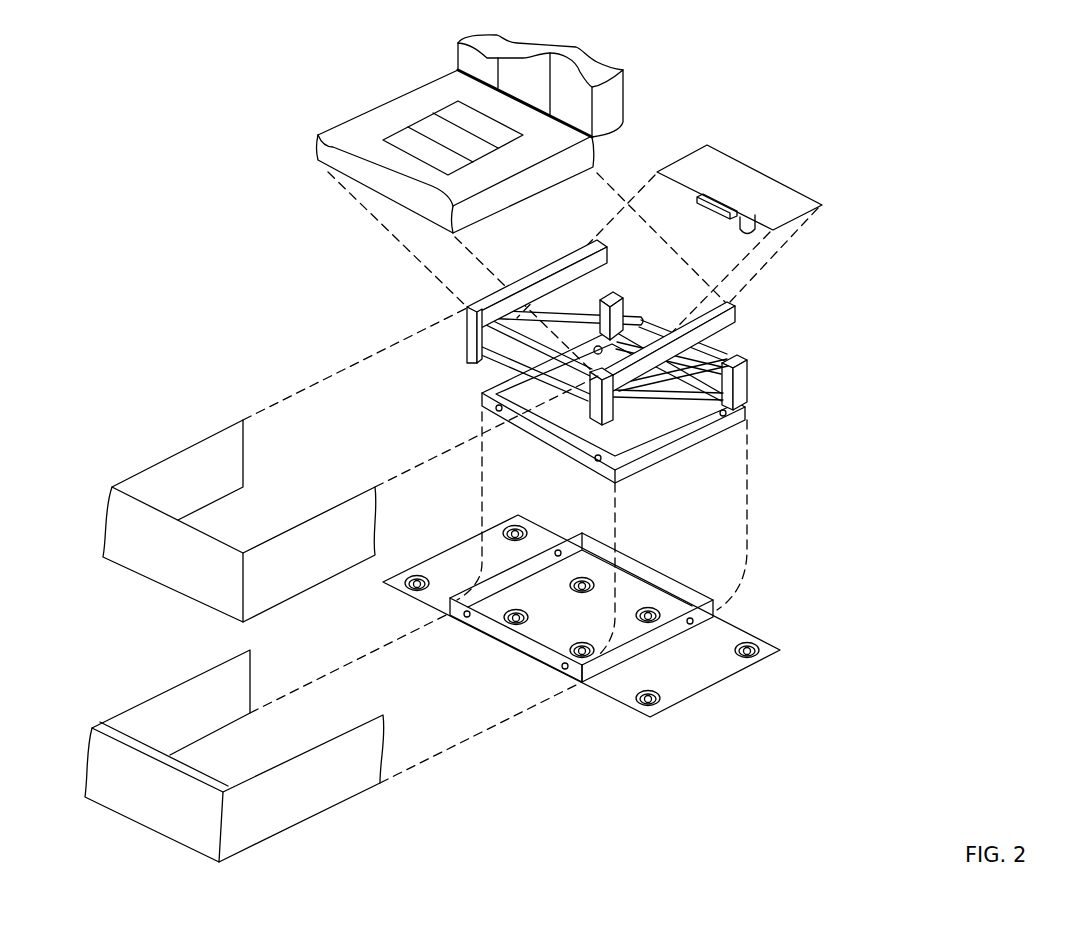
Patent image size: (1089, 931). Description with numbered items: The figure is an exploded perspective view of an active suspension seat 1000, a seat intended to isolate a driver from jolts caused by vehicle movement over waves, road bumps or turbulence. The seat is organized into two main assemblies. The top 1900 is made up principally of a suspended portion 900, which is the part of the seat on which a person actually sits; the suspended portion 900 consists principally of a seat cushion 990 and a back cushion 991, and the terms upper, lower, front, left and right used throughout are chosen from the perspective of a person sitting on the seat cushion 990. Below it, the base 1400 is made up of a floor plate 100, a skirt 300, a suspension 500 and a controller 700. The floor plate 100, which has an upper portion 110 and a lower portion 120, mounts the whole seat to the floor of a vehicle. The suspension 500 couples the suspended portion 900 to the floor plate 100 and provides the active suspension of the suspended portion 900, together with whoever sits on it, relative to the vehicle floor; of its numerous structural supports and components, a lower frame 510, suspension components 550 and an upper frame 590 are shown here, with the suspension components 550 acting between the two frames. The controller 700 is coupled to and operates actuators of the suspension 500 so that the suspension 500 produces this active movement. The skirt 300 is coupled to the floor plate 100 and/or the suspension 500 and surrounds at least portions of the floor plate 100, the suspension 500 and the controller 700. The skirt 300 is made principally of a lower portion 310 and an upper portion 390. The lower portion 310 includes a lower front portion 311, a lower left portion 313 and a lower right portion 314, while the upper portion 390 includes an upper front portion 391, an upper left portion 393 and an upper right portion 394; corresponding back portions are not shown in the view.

The active suspension seat 1000 is at (943, 69).
The top 1900 is at (198, 40).
The suspended portion 900 is at (333, 128).
The seat cushion 990 is at (460, 154).
The back cushion 991 is at (541, 88).
The base 1400 is at (880, 150).
The controller 700 is at (749, 193).
The suspension 500 is at (748, 338).
The lower frame 510 is at (752, 402).
The suspension components 550 is at (673, 358).
The upper frame 590 is at (467, 352).
The floor plate 100 is at (713, 682).
The upper portion 110 is at (533, 648).
The lower portion 120 is at (632, 600).
The skirt 300 is at (150, 560).
The upper portion 390 is at (196, 569).
The upper front portion 391 is at (218, 600).
The upper left portion 393 is at (316, 565).
The upper right portion 394 is at (217, 482).
The lower portion 310 is at (180, 811).
The lower front portion 311 is at (117, 798).
The lower left portion 313 is at (317, 797).
The lower right portion 314 is at (217, 715).